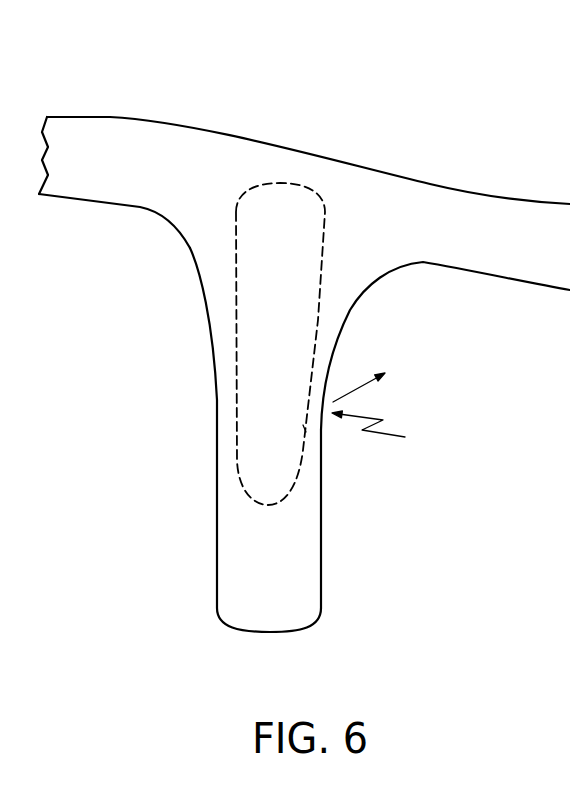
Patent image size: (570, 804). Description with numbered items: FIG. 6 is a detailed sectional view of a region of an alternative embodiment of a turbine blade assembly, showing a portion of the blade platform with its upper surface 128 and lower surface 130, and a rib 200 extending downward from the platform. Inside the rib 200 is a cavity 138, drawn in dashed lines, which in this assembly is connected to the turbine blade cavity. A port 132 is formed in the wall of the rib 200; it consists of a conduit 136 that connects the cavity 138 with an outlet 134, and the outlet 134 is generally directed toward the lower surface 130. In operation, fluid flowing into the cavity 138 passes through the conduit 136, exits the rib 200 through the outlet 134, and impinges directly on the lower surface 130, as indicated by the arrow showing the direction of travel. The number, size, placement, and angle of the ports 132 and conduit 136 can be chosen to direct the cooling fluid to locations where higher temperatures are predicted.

The upper surface 128 is at (120, 117).
The lower surface 130 is at (520, 281).
The port 132 is at (391, 432).
The outlet 134 is at (323, 390).
The conduit 136 is at (305, 428).
The cavity 138 is at (260, 420).
The rib 200 is at (245, 558).